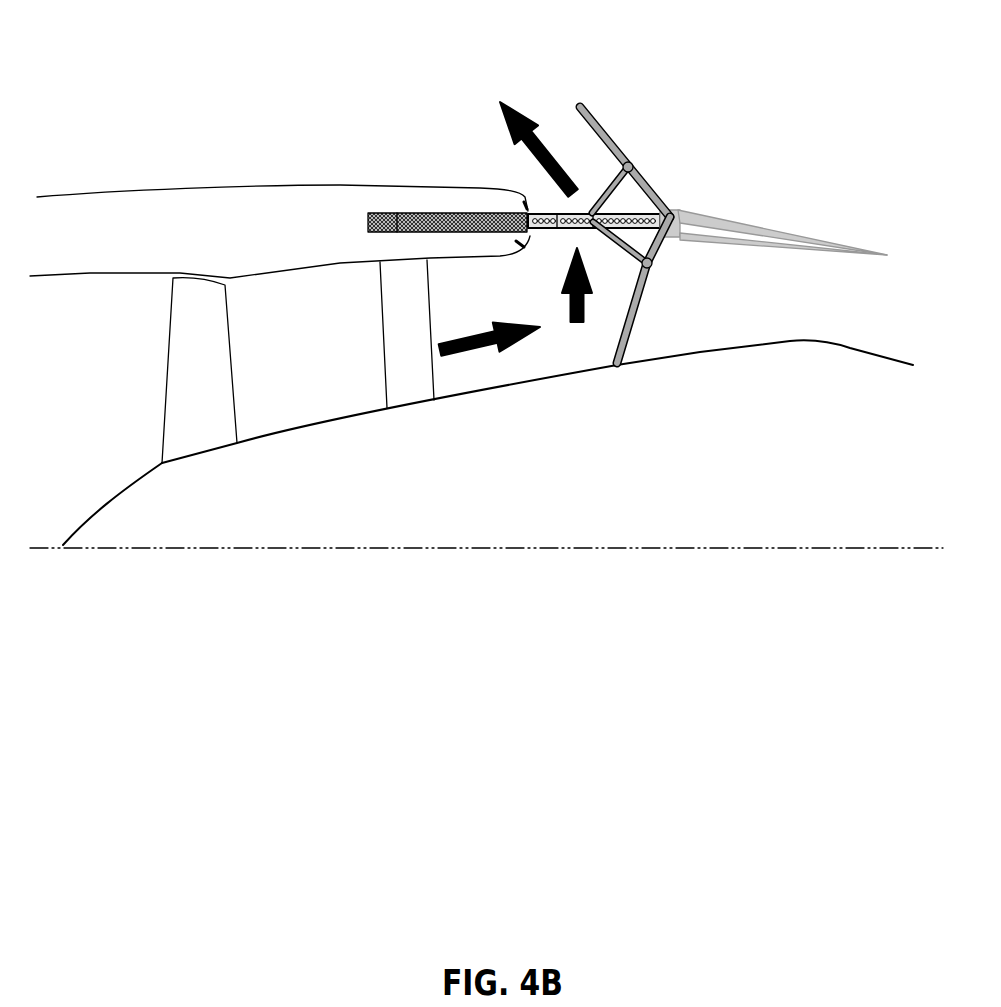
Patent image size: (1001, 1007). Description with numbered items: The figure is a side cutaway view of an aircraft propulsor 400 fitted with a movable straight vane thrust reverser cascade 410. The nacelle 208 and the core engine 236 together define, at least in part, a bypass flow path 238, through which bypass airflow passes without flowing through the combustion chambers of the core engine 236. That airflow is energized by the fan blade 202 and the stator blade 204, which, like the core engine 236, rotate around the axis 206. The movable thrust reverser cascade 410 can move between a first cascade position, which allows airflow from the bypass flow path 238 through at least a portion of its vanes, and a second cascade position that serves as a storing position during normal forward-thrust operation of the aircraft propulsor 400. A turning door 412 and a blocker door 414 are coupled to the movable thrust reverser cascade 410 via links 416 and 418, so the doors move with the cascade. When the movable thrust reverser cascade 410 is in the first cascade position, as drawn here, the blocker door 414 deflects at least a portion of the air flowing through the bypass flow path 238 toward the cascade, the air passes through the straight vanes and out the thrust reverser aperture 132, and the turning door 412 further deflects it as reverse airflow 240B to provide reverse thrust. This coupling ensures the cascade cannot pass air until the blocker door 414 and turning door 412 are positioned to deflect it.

The aircraft propulsor 400 is at (120, 113).
The nacelle 208 is at (300, 184).
The fan blade 202 is at (167, 355).
The stator blade 204 is at (437, 378).
The core engine 236 is at (138, 481).
The bypass flow path 238 is at (310, 373).
The axis 206 is at (340, 553).
The movable thrust reverser cascade 410 is at (514, 128).
The thrust reverser aperture 132 is at (585, 202).
The turning door 412 is at (592, 117).
The blocker door 414 is at (636, 317).
The link 416 is at (615, 189).
The link 418 is at (635, 243).
The reverse airflow 240B is at (520, 135).